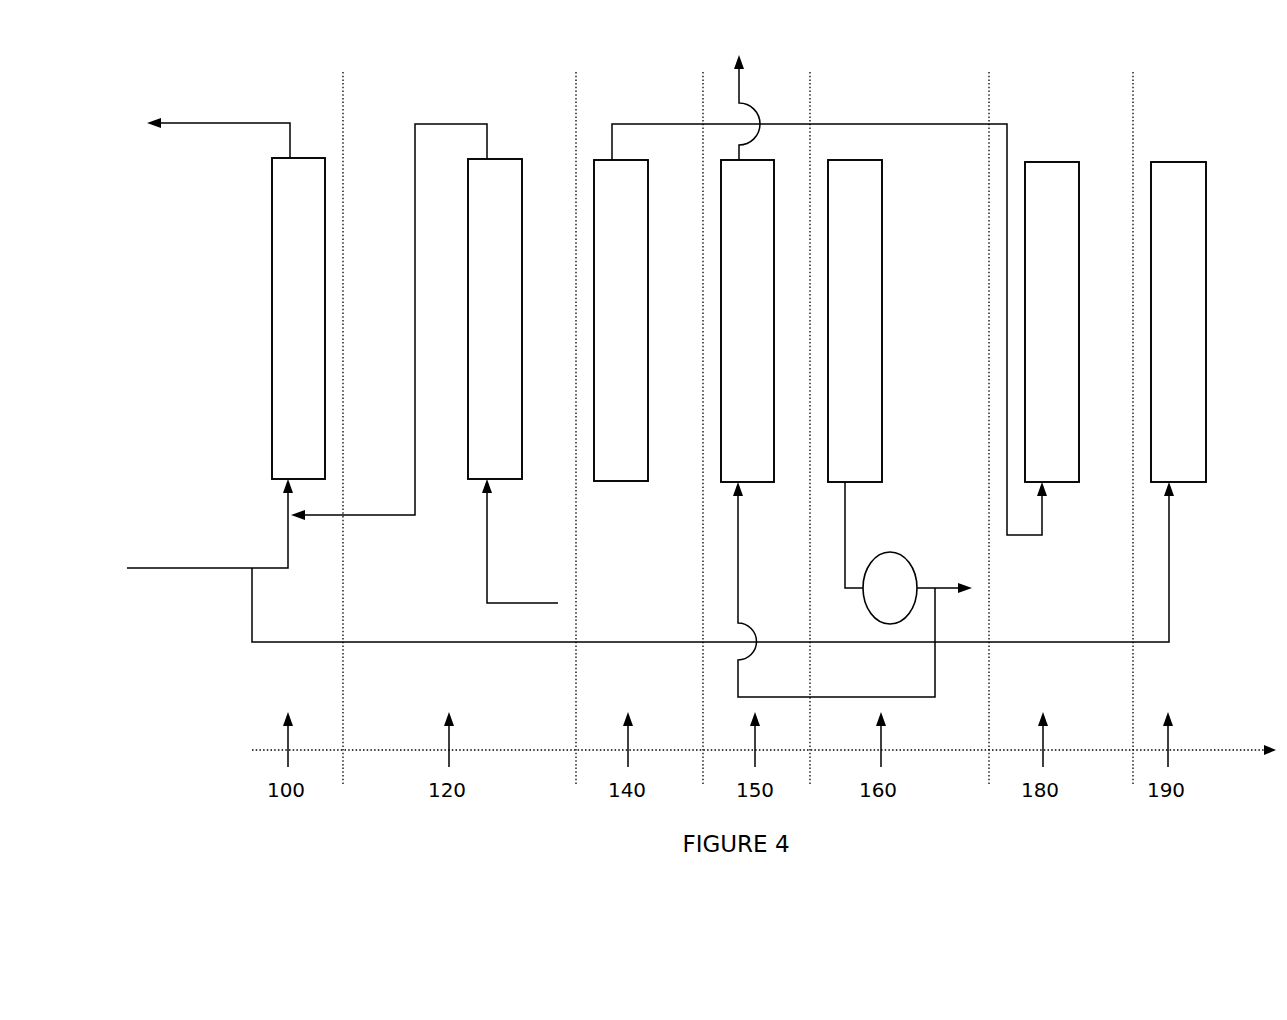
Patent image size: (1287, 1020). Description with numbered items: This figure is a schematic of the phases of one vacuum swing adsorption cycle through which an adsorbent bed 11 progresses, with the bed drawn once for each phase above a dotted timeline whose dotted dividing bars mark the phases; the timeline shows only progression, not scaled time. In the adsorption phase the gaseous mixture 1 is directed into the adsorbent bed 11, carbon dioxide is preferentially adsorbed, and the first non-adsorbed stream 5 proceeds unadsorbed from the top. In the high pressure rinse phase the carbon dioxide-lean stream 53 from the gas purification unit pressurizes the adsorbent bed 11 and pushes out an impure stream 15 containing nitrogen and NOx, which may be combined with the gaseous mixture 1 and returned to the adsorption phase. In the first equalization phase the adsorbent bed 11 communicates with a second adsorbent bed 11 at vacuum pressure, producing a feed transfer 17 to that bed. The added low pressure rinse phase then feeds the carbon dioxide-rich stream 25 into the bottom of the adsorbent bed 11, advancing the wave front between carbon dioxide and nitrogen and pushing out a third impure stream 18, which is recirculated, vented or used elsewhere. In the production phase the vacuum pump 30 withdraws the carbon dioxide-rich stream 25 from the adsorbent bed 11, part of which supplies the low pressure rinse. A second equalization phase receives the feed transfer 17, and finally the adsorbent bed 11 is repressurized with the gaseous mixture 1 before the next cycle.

The gaseous mixture 1 is at (217, 568).
The first non-adsorbed stream 5 is at (253, 122).
The adsorbent bed 11 is at (272, 295).
The impure stream 15 is at (415, 227).
The feed transfer 17 is at (685, 123).
The third impure stream 18 is at (739, 87).
The carbon dioxide-rich stream 25 is at (847, 535).
The vacuum pump 30 is at (900, 552).
The carbon dioxide-lean stream 53 is at (487, 573).